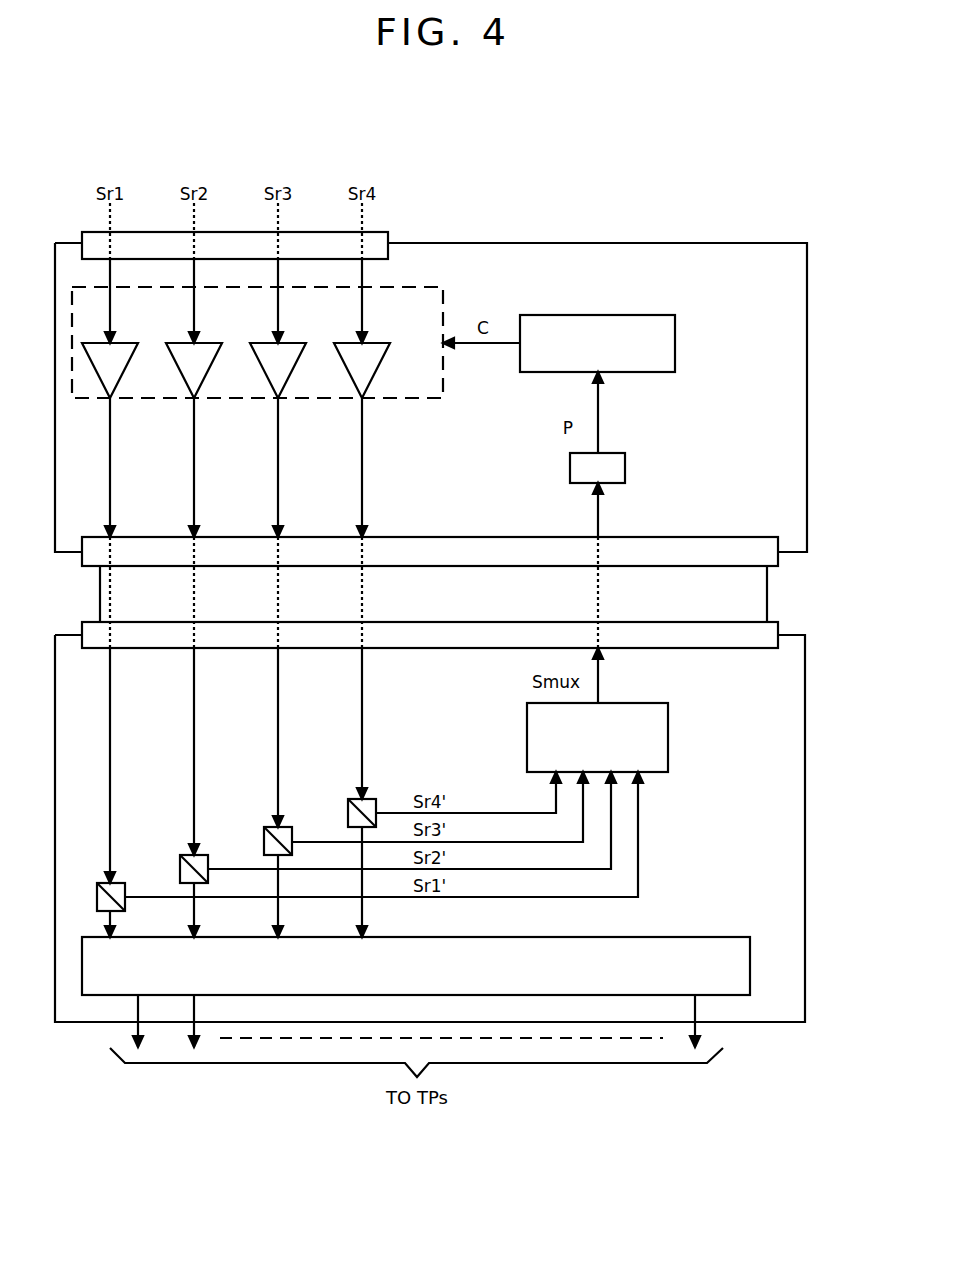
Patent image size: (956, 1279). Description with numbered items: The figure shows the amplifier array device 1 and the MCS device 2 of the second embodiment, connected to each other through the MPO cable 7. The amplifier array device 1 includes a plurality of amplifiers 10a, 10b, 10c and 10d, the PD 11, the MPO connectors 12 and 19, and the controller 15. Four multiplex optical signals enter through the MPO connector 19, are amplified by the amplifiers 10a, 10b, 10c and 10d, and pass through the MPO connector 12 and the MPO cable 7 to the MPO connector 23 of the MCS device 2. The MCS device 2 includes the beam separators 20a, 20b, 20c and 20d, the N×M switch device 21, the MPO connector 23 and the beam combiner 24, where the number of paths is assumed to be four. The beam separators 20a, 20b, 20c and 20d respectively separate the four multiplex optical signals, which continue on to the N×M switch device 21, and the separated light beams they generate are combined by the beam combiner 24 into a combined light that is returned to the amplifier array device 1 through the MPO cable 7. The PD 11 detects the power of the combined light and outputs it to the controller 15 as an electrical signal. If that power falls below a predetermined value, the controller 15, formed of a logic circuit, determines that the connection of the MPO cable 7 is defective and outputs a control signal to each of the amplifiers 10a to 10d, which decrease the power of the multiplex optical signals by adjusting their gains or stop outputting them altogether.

The amplifier array device 1 is at (807, 272).
The MCS device 2 is at (807, 660).
The MPO cable 7 is at (100, 596).
The amplifier 10a is at (128, 343).
The amplifier 10b is at (212, 343).
The amplifier 10c is at (296, 343).
The amplifier 10d is at (380, 343).
The PD 11 is at (612, 453).
The MPO connector 12 is at (760, 537).
The controller 15 is at (645, 315).
The MPO connector 19 is at (370, 232).
The beam separator 20a is at (127, 883).
The beam separator 20b is at (210, 855).
The beam separator 20c is at (293, 827).
The beam separator 20d is at (377, 799).
The N×M switch device 21 is at (720, 937).
The MPO connector 23 is at (780, 622).
The beam combiner 24 is at (660, 703).